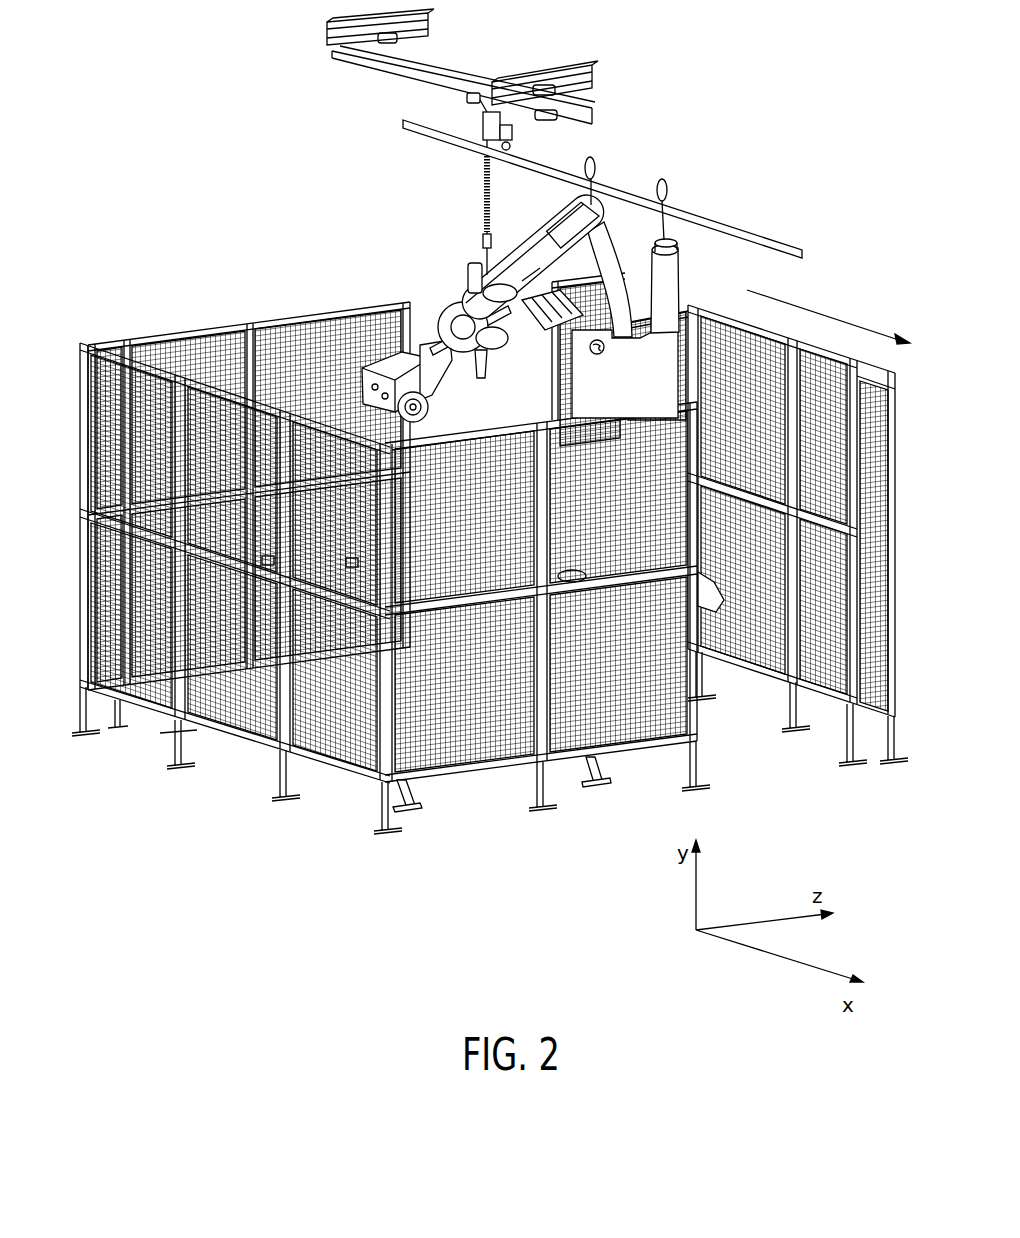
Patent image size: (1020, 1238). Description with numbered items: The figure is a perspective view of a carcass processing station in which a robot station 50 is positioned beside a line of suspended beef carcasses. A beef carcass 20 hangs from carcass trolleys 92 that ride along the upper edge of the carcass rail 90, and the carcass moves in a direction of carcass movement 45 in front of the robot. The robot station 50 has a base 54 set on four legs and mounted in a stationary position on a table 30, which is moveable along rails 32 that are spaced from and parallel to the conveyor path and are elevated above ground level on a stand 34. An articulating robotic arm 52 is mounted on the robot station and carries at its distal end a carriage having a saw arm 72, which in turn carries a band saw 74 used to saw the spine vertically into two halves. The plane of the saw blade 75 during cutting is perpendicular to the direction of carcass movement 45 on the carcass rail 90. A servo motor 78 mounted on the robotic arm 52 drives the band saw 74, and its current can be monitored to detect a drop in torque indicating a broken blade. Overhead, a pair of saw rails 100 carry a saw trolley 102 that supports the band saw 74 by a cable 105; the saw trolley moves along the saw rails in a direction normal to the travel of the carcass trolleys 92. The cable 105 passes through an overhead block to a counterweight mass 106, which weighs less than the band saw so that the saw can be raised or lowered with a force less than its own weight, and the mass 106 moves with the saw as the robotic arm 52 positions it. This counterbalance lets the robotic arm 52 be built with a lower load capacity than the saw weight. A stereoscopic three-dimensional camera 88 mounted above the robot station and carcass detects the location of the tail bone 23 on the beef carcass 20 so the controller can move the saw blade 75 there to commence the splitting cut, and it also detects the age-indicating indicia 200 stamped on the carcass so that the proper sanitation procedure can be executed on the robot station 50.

The beef carcass 20 is at (628, 368).
The tail bone 23 is at (620, 327).
The table 30 is at (350, 560).
The rails 32 is at (267, 560).
The stand 34 is at (415, 790).
The direction of carcass movement 45 is at (837, 317).
The robot station 50 is at (306, 363).
The robotic arm 52 is at (465, 389).
The base 54 is at (567, 573).
The saw arm 72 is at (468, 278).
The band saw 74 is at (562, 210).
The saw blade 75 is at (537, 267).
The servo motor 78 is at (465, 315).
The stereoscopic 3D camera 88 is at (540, 318).
The carcass rail 90 is at (733, 222).
The carcass trolleys 92 is at (665, 185).
The saw rails 100 is at (432, 26).
The saw trolley 102 is at (388, 72).
The cable 105 is at (485, 184).
The counterweight mass 106 is at (500, 132).
The age-indicating indicia 200 is at (598, 356).